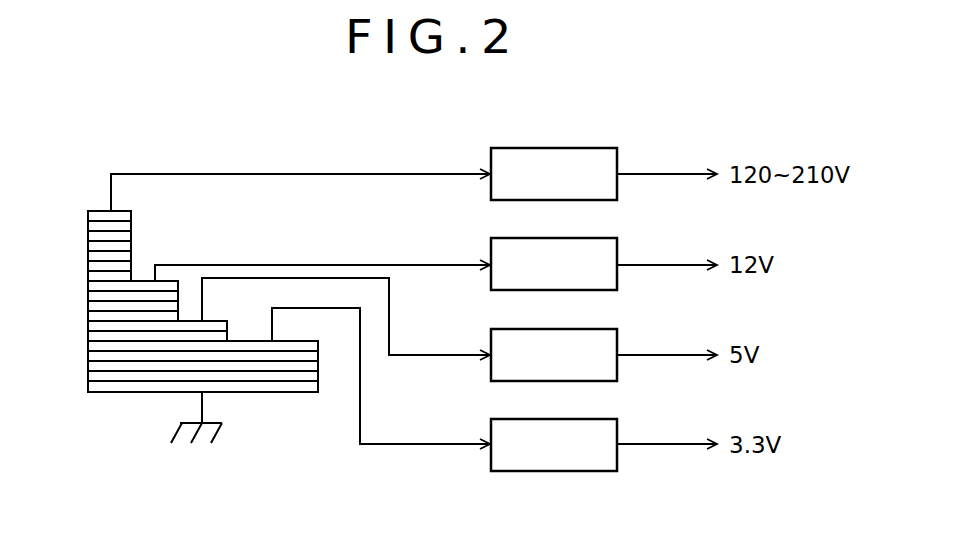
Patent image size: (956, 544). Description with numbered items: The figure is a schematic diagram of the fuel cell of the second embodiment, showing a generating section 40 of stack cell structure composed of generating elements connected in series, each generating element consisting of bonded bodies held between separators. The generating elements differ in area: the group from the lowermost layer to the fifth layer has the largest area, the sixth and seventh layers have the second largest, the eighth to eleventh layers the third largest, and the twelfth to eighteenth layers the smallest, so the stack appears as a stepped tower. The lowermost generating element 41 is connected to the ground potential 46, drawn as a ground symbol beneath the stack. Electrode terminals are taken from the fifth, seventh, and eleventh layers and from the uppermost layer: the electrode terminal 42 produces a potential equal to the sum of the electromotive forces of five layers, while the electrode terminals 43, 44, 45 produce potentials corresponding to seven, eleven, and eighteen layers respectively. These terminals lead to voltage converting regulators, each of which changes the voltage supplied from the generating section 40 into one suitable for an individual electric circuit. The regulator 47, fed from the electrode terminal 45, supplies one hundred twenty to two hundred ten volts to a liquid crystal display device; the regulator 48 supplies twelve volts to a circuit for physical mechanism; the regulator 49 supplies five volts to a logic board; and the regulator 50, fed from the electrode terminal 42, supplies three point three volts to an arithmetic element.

The generating section 40 is at (122, 467).
The lowermost generating element 41 is at (297, 392).
The electrode terminal 42 is at (273, 328).
The electrode terminal 43 is at (203, 306).
The electrode terminal 44 is at (152, 278).
The electrode terminal 45 is at (112, 190).
The ground potential 46 is at (172, 435).
The voltage converting regulator 47 is at (589, 148).
The voltage converting regulator 48 is at (589, 238).
The voltage converting regulator 49 is at (589, 329).
The voltage converting regulator 50 is at (589, 419).